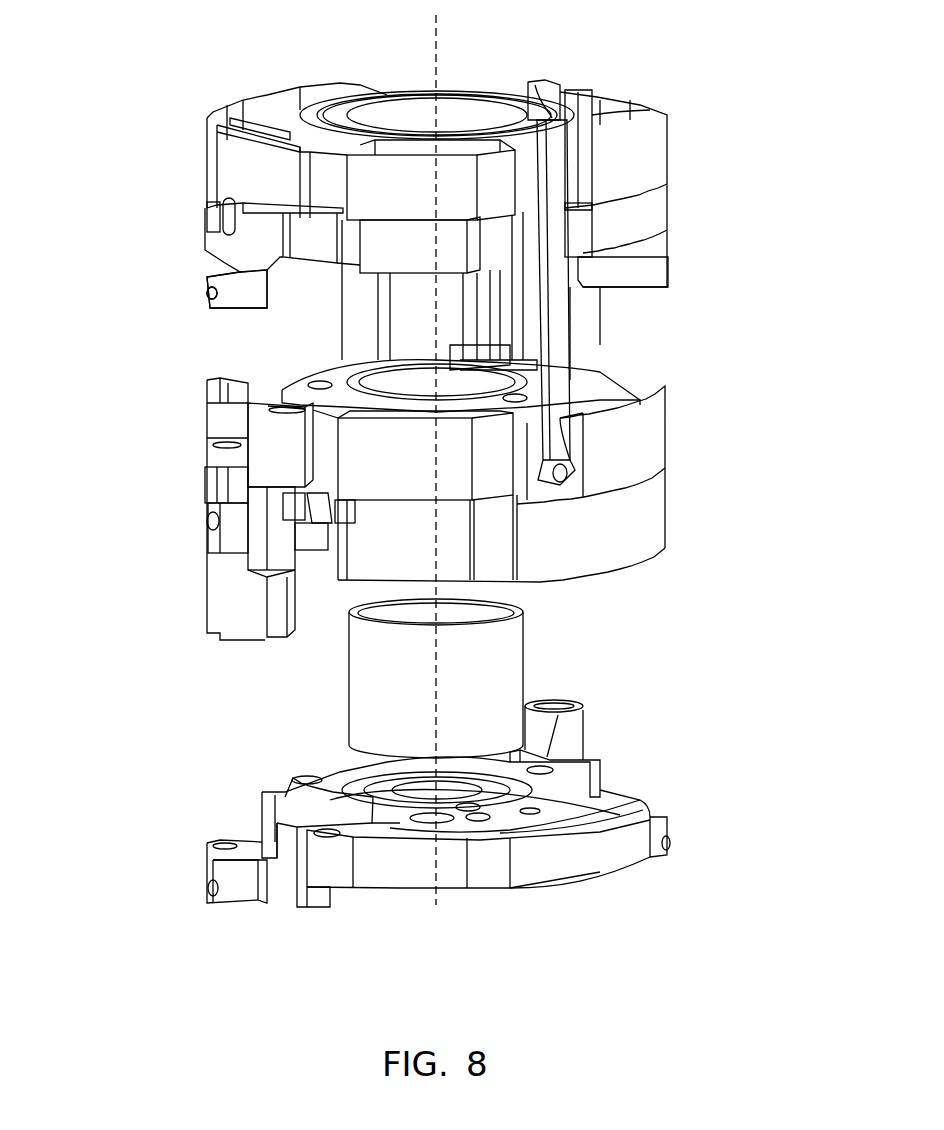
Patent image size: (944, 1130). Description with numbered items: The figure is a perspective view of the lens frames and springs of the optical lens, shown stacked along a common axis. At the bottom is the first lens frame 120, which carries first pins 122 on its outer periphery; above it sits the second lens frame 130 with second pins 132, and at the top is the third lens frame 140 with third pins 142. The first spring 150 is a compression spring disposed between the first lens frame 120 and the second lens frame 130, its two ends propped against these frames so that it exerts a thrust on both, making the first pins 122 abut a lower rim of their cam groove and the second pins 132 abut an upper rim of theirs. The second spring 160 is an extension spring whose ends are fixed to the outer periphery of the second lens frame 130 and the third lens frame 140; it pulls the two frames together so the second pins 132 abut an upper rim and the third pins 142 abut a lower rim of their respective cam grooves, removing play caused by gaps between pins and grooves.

The first lens frame 120 is at (590, 866).
The first pins 122 is at (207, 887).
The second lens frame 130 is at (650, 447).
The second pins 132 is at (207, 523).
The third lens frame 140 is at (648, 165).
The third pins 142 is at (207, 291).
The first spring 150 is at (512, 650).
The second spring 160 is at (600, 340).